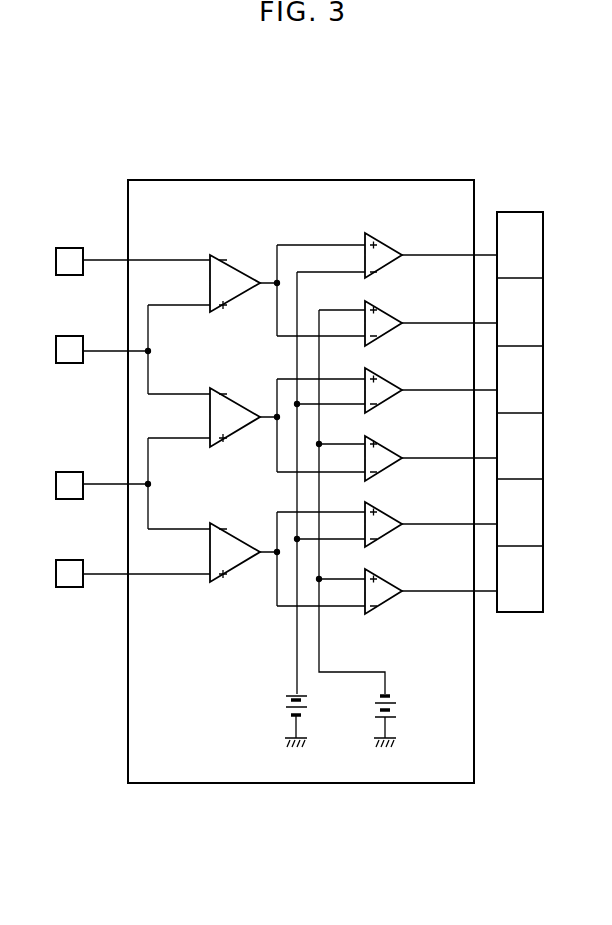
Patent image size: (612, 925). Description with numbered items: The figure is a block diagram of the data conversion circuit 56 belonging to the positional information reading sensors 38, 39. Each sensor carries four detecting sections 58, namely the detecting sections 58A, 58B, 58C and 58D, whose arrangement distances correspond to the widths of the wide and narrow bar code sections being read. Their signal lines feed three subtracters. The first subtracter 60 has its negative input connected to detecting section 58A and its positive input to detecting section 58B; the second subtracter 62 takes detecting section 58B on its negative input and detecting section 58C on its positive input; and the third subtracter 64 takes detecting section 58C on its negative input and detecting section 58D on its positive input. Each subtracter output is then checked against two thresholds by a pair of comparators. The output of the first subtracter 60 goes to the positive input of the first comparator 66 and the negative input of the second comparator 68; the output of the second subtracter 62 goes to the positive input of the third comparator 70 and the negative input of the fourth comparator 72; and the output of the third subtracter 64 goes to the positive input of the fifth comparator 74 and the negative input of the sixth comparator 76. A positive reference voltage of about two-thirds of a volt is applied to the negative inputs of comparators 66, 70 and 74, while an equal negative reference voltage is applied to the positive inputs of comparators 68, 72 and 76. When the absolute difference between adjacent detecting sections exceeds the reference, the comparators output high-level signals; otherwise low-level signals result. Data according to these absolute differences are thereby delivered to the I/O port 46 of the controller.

The positional information reading sensor 38 is at (245, 178).
The positional information reading sensor 39 is at (301, 481).
The data conversion circuit 56 is at (353, 180).
The detecting sections 58 is at (68, 189).
The detecting section 58A is at (73, 248).
The detecting section 58B is at (73, 336).
The detecting section 58C is at (73, 472).
The detecting section 58D is at (73, 560).
The first subtracter 60 is at (243, 270).
The second subtracter 62 is at (243, 403).
The third subtracter 64 is at (243, 538).
The first comparator 66 is at (393, 247).
The second comparator 68 is at (393, 315).
The third comparator 70 is at (393, 384).
The fourth comparator 72 is at (393, 450).
The fifth comparator 74 is at (393, 518).
The sixth comparator 76 is at (393, 585).
The I/O port 46 is at (519, 212).